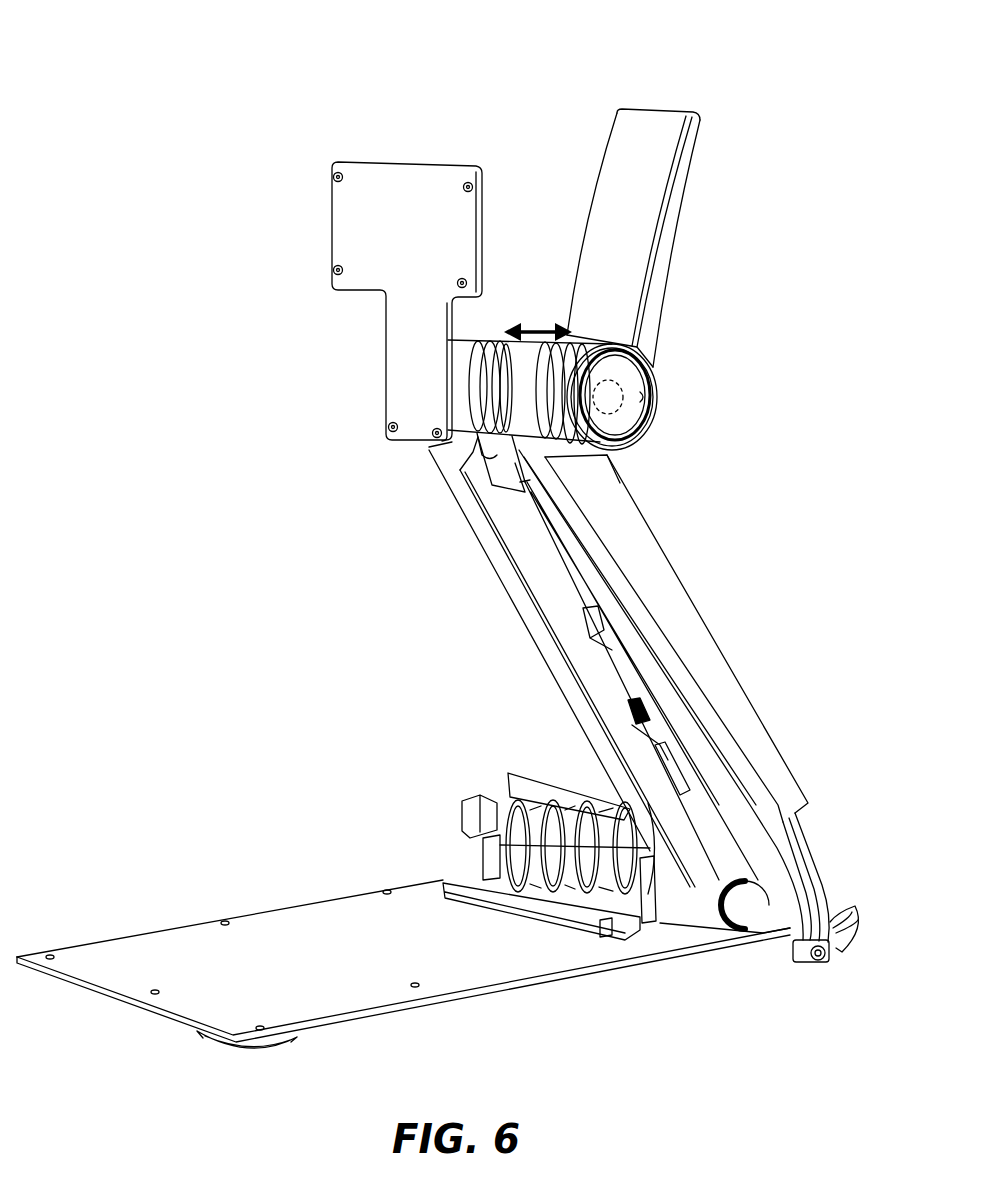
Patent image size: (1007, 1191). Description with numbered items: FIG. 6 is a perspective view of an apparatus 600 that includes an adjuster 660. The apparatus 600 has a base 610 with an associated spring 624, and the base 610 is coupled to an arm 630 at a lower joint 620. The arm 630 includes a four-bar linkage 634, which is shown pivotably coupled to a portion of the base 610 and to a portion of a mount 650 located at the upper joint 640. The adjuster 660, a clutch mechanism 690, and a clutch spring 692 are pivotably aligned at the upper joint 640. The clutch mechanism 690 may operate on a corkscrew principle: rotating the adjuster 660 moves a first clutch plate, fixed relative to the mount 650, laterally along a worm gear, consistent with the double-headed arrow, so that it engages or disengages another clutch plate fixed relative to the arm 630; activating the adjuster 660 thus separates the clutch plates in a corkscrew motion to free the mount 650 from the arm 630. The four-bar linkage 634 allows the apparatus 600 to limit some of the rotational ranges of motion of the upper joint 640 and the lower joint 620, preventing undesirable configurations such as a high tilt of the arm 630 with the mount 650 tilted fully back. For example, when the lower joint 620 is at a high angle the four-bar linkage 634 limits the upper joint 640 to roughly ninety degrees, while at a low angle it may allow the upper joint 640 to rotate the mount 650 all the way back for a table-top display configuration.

The apparatus 600 is at (253, 57).
The base 610 is at (138, 947).
The lower joint 620 is at (830, 925).
The spring 624 is at (521, 811).
The arm 630 is at (685, 638).
The four-bar linkage 634 is at (782, 838).
The upper joint 640 is at (605, 398).
The mount 650 is at (352, 232).
The adjuster 660 is at (622, 154).
The clutch mechanism 690 is at (503, 345).
The clutch spring 692 is at (540, 365).